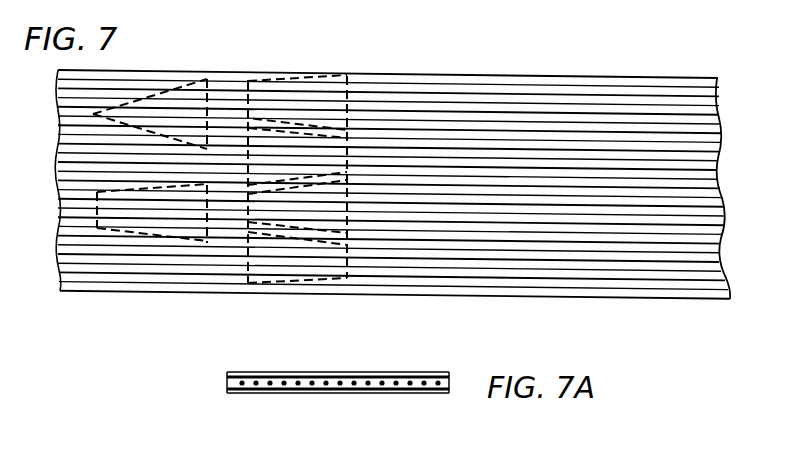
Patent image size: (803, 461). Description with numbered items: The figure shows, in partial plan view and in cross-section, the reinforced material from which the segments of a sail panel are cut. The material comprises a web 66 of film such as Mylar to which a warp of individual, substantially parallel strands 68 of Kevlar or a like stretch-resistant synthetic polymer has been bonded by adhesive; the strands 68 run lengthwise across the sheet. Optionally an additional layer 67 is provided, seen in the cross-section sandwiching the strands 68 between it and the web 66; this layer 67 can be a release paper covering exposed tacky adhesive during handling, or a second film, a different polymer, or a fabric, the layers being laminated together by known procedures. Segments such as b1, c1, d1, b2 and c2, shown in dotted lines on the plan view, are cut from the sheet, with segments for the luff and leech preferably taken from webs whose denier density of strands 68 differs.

In FIG. 7, the web of film 66 is at (490, 76).
In FIG. 7A, the web of film 66 is at (392, 390).
In FIG. 7A, the additional layer 67 is at (397, 373).
In FIG. 7, the strands 68 is at (678, 95).
In FIG. 7A, the strands 68 is at (335, 384).
In FIG. 7, the segment b1 is at (311, 76).
In FIG. 7, the segment c1 is at (352, 142).
In FIG. 7, the segment b2 is at (152, 238).
In FIG. 7, the segment c2 is at (337, 280).
In FIG. 7, the segment d1 is at (347, 200).